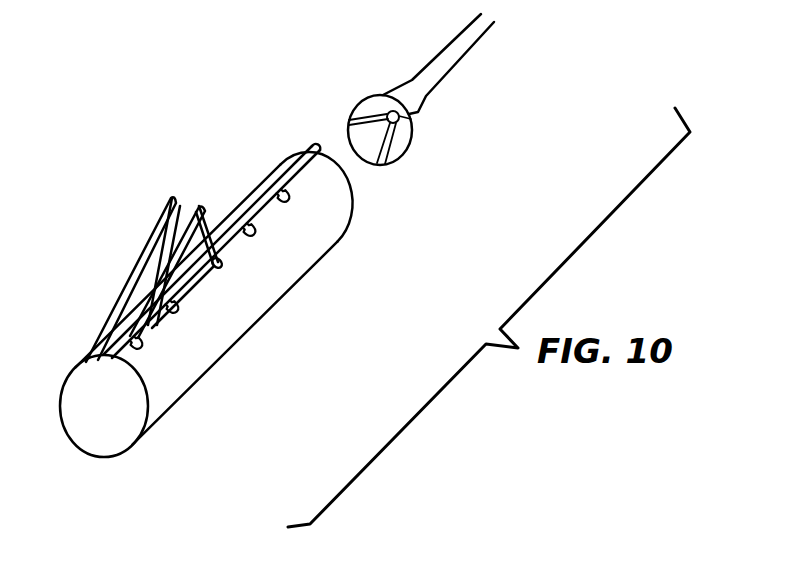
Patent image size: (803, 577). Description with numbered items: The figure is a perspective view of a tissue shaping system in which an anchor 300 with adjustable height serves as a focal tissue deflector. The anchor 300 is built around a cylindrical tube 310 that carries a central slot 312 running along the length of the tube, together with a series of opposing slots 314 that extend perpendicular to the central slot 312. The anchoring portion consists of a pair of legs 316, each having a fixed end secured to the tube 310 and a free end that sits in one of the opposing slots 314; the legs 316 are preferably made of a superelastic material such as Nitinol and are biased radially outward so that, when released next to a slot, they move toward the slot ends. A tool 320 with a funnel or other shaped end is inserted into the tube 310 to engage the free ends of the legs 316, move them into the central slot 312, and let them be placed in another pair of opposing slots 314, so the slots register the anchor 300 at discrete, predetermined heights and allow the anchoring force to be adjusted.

The anchor 300 is at (308, 377).
The cylindrical tube 310 is at (162, 383).
The central slot 312 is at (294, 168).
The opposing slots 314 is at (264, 186).
The legs 316 is at (158, 226).
The tool 320 is at (421, 120).